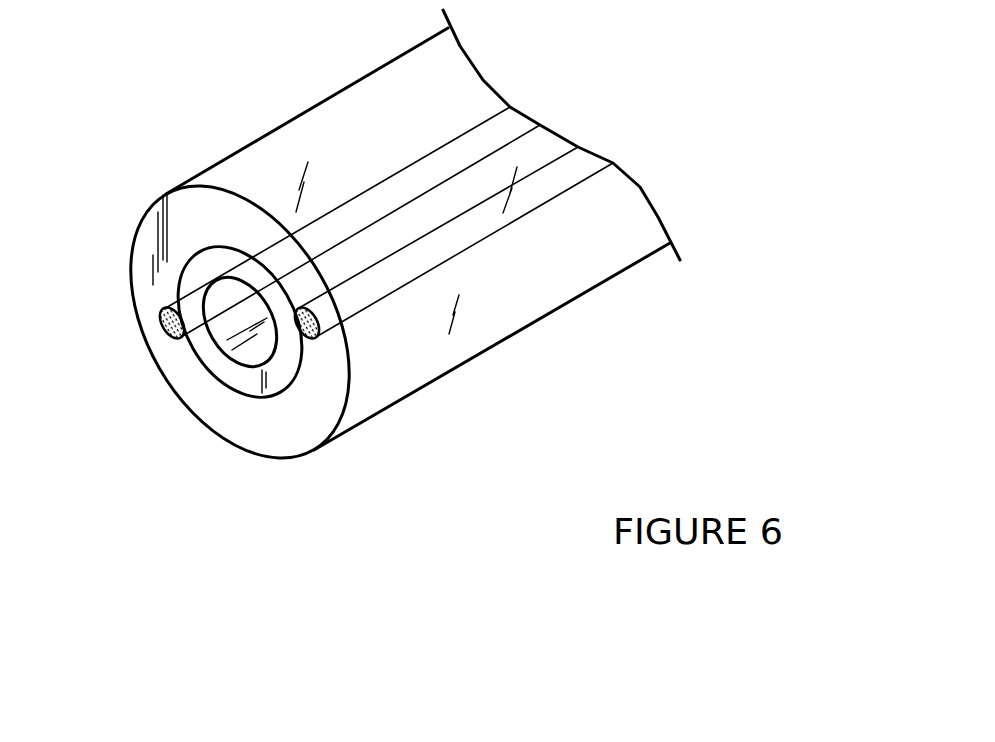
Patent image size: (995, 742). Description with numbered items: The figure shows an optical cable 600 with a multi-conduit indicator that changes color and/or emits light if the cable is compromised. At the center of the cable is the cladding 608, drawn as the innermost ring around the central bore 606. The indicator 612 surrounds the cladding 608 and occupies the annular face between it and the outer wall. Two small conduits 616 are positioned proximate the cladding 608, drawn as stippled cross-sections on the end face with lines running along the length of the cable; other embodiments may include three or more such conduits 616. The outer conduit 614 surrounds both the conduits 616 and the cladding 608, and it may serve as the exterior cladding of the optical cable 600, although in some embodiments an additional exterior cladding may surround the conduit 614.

The catheter shaft 600 is at (330, 94).
The lumen 606 is at (228, 338).
The cladding 608 is at (238, 375).
The indicator 612 is at (238, 418).
The conduit 614 is at (290, 460).
The conduits 616 is at (158, 324).